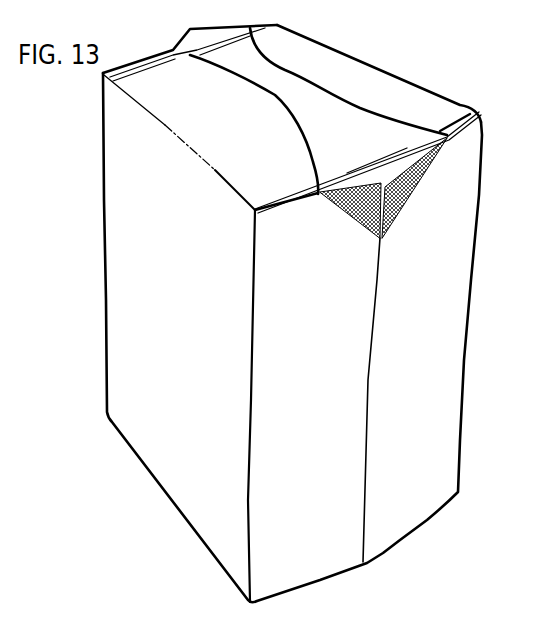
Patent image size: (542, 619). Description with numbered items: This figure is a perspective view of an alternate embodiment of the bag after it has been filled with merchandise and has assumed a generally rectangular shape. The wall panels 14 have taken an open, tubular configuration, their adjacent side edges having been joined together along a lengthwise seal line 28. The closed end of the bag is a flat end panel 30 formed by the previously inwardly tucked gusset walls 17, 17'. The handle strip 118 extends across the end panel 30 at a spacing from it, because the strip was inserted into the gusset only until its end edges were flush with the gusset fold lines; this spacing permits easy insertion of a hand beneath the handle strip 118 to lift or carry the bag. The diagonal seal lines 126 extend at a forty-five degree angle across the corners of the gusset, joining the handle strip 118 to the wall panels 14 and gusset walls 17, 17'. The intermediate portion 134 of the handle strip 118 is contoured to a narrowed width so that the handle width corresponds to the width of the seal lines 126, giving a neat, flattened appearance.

The wall panel 14 is at (113, 222).
The gusset wall 17 is at (368, 119).
The gusset wall 17' is at (158, 77).
The seal line 28 is at (372, 382).
The end panel 30 is at (225, 160).
The handle strip 118 is at (322, 80).
The seal line 126 is at (352, 222).
The intermediate portion 134 is at (273, 90).